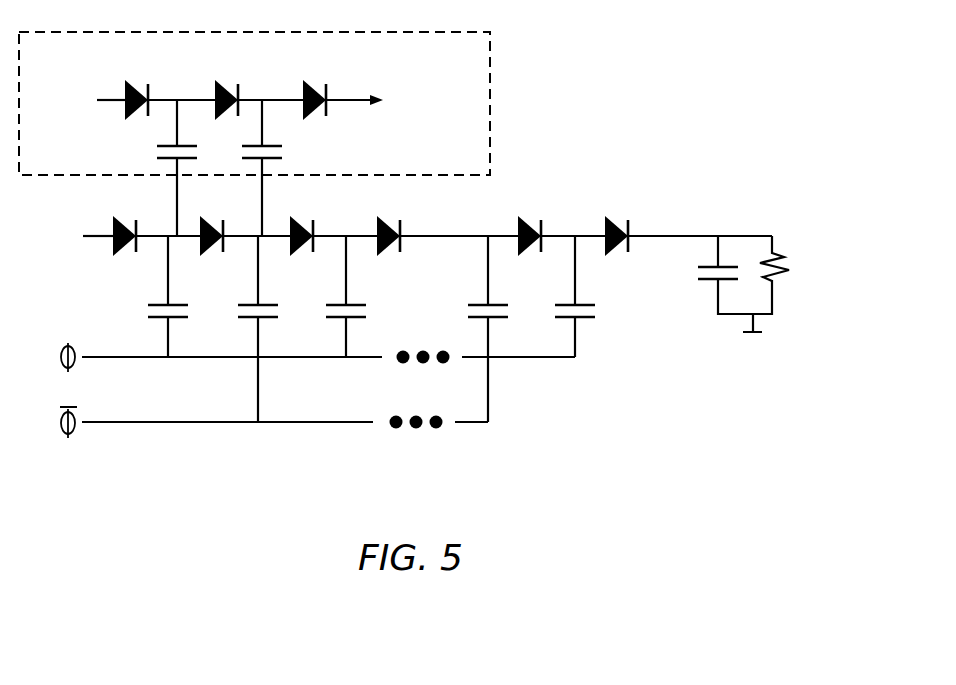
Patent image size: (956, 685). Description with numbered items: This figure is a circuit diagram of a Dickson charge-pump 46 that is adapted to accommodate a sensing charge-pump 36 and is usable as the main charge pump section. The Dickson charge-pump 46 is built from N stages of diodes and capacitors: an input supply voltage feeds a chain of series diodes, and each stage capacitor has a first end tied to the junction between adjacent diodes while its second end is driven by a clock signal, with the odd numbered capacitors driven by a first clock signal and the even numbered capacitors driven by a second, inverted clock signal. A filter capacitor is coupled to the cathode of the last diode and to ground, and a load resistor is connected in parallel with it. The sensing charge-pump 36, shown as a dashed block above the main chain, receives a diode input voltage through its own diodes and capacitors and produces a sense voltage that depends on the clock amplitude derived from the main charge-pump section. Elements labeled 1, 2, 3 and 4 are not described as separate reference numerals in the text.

The sensing charge-pump 36 is at (480, 64).
The Dickson charge-pump 46 is at (556, 74).
The first diode D1 1 is at (135, 226).
The second diode D2 2 is at (218, 226).
The third diode D3 3 is at (310, 226).
The fourth diode D4 4 is at (395, 226).